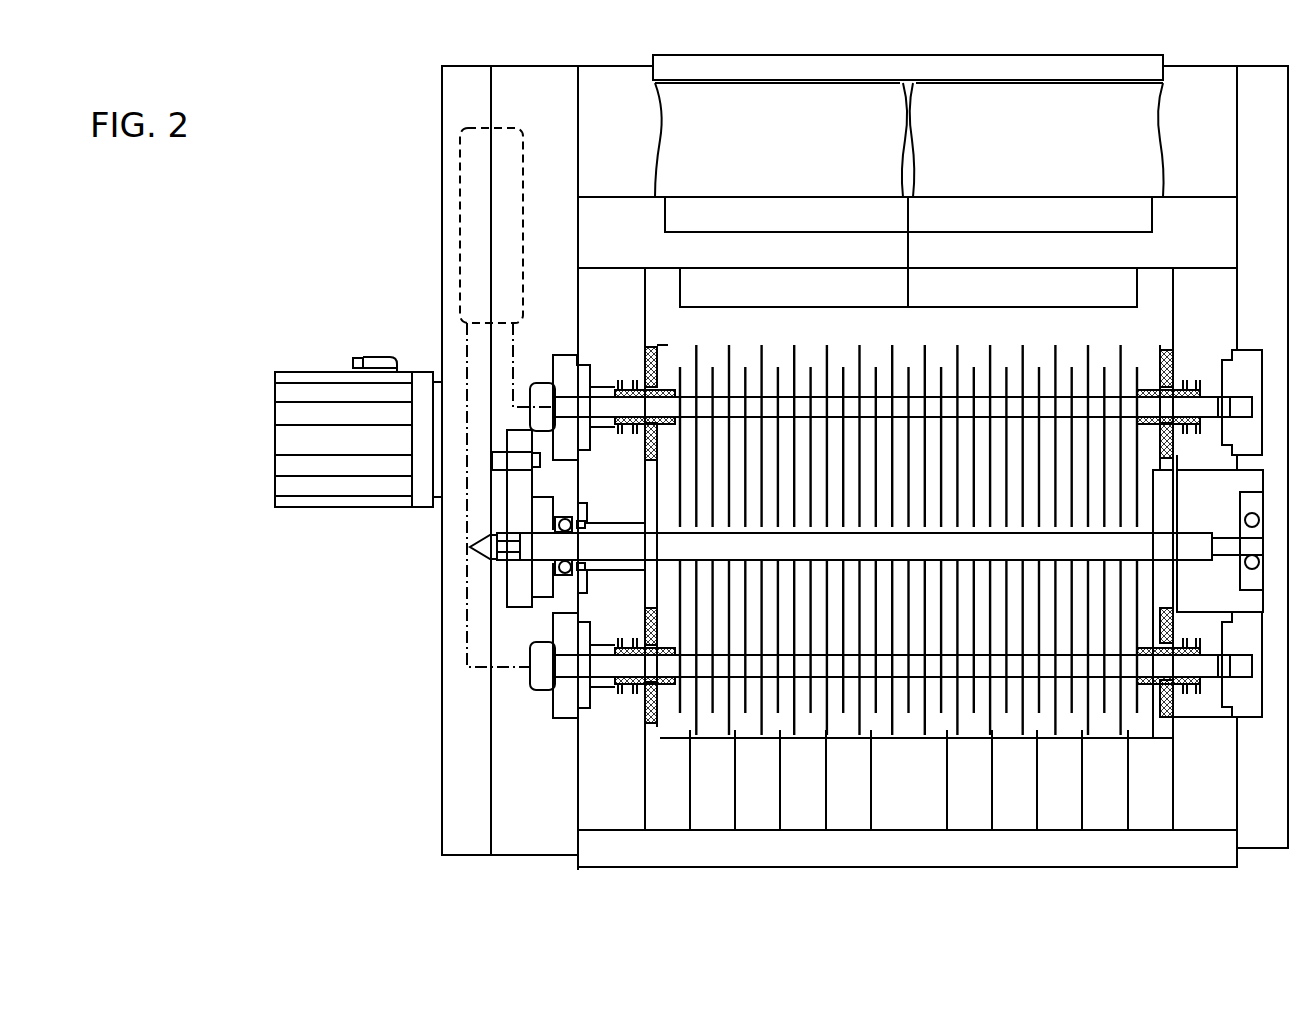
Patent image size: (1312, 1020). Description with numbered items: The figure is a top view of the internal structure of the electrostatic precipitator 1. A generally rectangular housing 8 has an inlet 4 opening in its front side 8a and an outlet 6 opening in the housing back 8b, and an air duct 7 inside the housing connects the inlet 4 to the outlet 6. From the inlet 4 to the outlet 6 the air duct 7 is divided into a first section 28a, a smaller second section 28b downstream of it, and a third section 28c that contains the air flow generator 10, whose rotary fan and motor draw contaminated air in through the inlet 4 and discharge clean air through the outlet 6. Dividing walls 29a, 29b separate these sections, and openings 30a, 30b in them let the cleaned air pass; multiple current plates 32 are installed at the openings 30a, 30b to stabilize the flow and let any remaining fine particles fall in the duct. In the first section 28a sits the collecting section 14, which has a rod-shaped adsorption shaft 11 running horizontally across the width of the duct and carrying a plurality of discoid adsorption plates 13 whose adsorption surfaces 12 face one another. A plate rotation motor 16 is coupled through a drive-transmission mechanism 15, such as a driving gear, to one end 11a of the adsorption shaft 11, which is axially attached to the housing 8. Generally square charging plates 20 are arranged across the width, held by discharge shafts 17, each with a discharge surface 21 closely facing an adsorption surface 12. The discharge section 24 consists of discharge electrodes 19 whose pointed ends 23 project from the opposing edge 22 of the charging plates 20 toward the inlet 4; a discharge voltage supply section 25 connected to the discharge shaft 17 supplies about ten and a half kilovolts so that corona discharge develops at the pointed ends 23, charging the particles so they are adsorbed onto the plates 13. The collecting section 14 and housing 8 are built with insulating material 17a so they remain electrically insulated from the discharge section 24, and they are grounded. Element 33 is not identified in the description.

The electrostatic precipitator 1 is at (408, 66).
The inlet 4 is at (805, 868).
The outlet 6 is at (793, 66).
The air duct 7 is at (425, 276).
The housing 8 is at (440, 582).
The front side of the housing 8a is at (530, 856).
The housing back 8b is at (537, 53).
The air flow generator 10 is at (1150, 146).
The adsorption shaft 11 is at (1190, 540).
The one end of the adsorption shaft 11a is at (540, 598).
The adsorption surface 12 is at (908, 513).
The adsorption plate 13 is at (1088, 355).
The collecting section 14 is at (628, 323).
The drive-transmission mechanism 15 is at (437, 520).
The plate rotation motor 16 is at (318, 385).
The discharge shaft 17 is at (630, 388).
The insulating material 17a is at (632, 436).
The discharge electrode 19 is at (1104, 725).
The charging plate 20 is at (1040, 348).
The discharge surface 21 is at (908, 272).
The opposing edge 22 is at (1140, 712).
The pointed end 23 is at (909, 780).
The discharge section 24 is at (640, 762).
The discharge voltage supply section 25 is at (509, 128).
The first section 28a is at (1188, 722).
The second section 28b is at (642, 248).
The third section 28c is at (645, 138).
The dividing wall 29a is at (1173, 270).
The dividing wall 29b is at (1237, 198).
The opening 30a is at (700, 280).
The opening 30b is at (980, 226).
The current plate 32 is at (1095, 840).
The slit 33 is at (1022, 760).